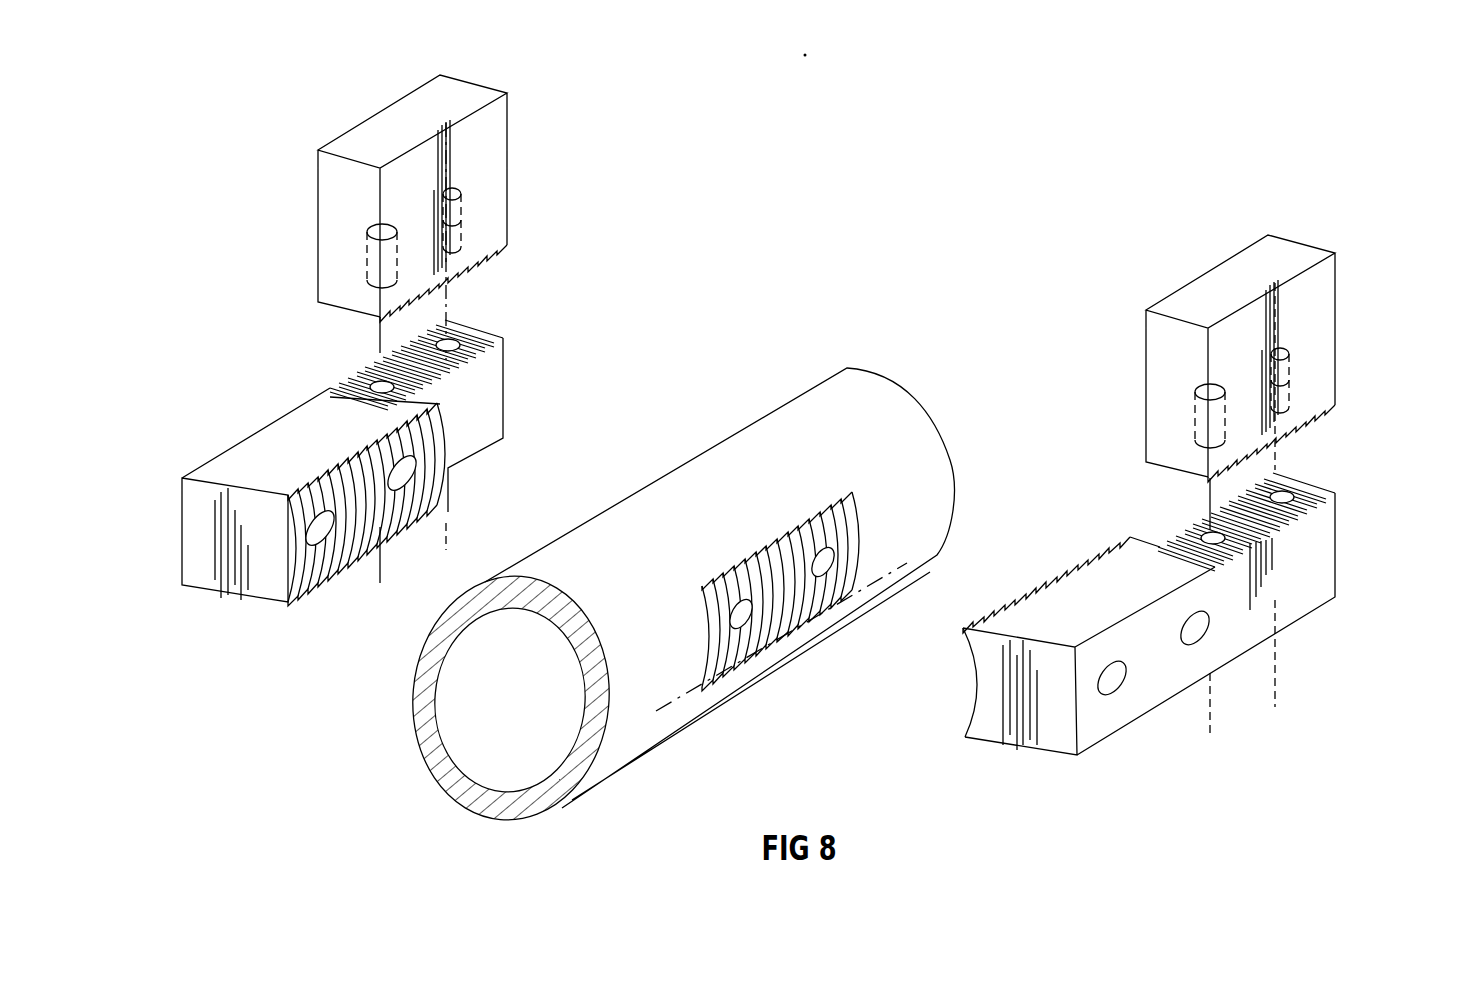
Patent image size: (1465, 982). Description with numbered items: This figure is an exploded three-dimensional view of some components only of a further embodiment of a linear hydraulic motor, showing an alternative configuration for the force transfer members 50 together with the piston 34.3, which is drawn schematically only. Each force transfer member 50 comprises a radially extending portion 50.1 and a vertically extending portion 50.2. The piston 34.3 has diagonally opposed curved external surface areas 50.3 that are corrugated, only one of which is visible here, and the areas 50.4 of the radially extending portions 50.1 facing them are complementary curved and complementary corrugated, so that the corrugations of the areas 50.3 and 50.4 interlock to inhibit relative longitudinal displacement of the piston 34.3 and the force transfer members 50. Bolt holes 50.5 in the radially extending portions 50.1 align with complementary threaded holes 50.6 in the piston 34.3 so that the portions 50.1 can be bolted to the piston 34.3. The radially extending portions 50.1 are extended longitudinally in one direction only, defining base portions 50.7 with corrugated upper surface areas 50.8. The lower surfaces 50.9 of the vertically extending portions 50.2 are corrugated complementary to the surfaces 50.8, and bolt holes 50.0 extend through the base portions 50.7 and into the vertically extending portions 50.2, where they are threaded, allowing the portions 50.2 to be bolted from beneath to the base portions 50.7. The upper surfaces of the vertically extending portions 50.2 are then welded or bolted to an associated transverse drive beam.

The piston 34.3 is at (679, 561).
The force transfer members 50 is at (141, 418).
The bolt holes 50.0 is at (372, 385).
The radially extending portion 50.1 is at (225, 570).
The vertically extending portion 50.2 is at (338, 206).
The curved external surface areas 50.3 is at (770, 553).
The areas 50.4 is at (383, 531).
The bolt holes 50.5 is at (398, 474).
The threaded holes 50.6 is at (826, 580).
The base portions 50.7 is at (482, 387).
The corrugated upper surface areas 50.8 is at (470, 340).
The lower surfaces 50.9 is at (499, 265).